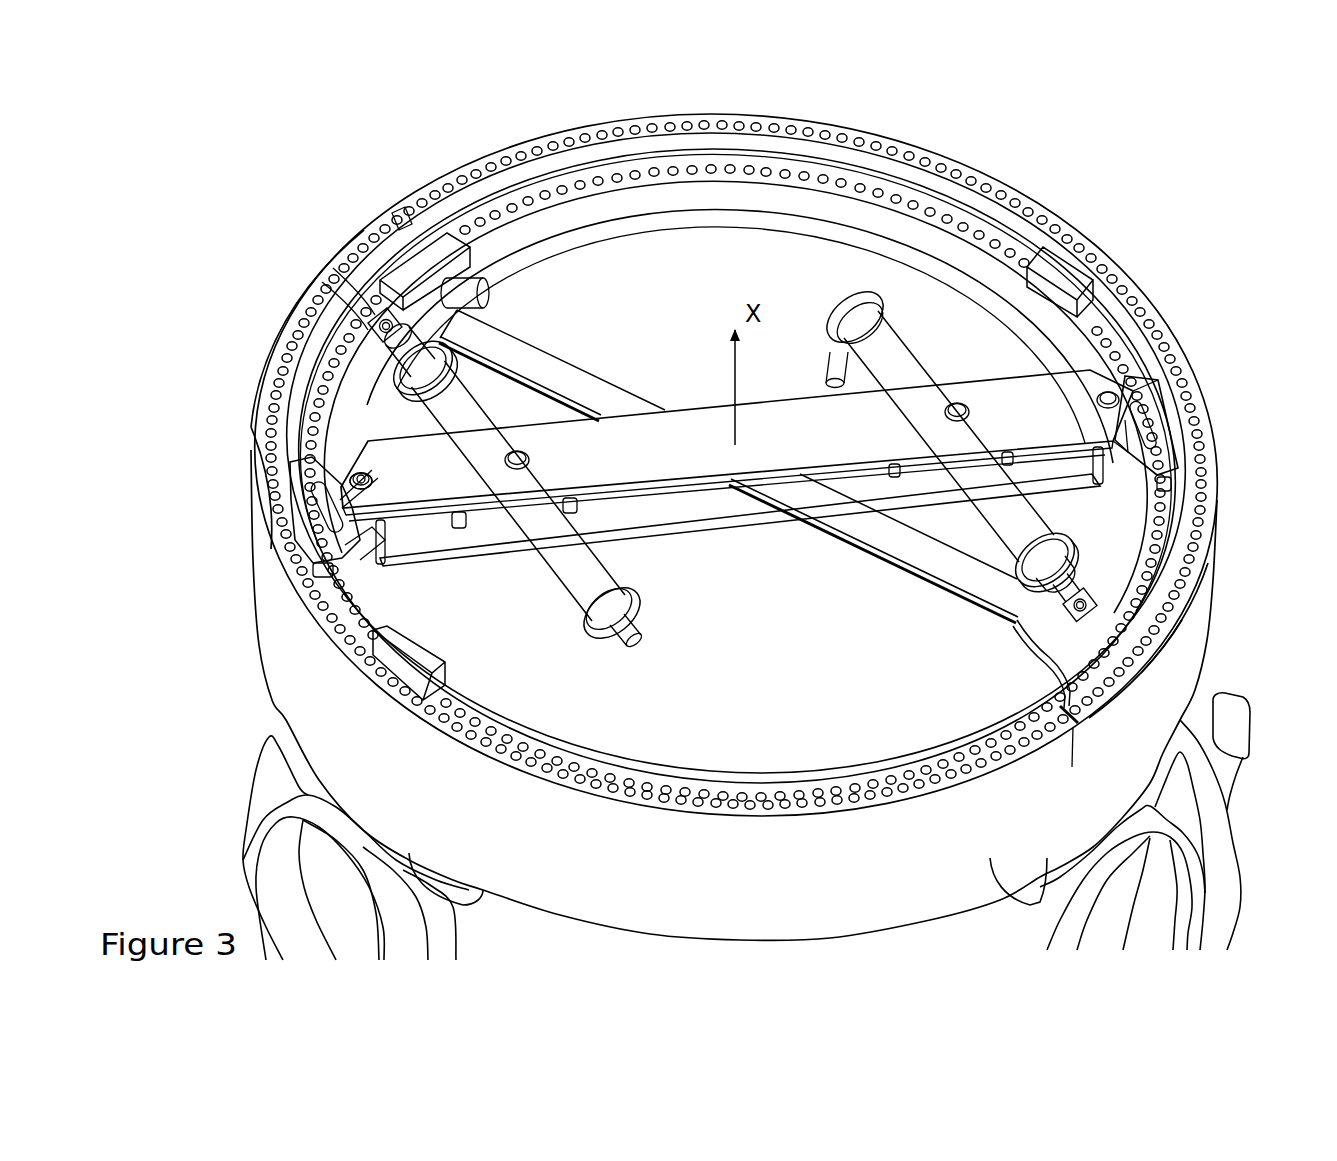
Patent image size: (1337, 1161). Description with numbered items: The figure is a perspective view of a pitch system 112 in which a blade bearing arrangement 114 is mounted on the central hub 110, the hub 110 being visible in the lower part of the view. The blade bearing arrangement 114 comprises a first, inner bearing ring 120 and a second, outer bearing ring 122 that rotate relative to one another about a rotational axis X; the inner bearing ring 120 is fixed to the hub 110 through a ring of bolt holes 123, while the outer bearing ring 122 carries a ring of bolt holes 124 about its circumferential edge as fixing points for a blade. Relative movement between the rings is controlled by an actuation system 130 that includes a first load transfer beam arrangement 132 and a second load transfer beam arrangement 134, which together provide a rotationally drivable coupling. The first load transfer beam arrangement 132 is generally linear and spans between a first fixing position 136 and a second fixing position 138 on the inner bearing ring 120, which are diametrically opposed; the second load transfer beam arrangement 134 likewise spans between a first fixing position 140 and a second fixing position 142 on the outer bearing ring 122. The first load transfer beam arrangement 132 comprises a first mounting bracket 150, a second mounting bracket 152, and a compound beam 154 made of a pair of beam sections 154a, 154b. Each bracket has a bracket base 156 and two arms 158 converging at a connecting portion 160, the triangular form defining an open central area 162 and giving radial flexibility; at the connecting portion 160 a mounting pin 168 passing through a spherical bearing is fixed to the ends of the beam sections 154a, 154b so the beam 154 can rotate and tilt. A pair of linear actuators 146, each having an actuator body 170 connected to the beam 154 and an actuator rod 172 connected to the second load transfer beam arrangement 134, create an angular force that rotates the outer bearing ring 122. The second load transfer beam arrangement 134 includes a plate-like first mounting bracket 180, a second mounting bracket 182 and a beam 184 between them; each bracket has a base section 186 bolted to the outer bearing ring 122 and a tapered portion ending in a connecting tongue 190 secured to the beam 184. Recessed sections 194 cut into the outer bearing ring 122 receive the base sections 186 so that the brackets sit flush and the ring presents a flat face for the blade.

The central hub 110 is at (1217, 840).
The pitch system 112 is at (754, 516).
The blade bearing arrangement 114 is at (754, 452).
The first bearing ring 120 is at (957, 218).
The second bearing ring 122 is at (940, 150).
The ring of bolt holes 123 is at (613, 177).
The ring of bolt holes 124 is at (670, 118).
The actuation system 130 is at (903, 740).
The first load transfer beam arrangement 132 is at (1052, 386).
The second load transfer beam arrangement 134 is at (754, 493).
The first fixing position 136 is at (375, 479).
The second fixing position 138 is at (1220, 406).
The first fixing position 140 is at (288, 348).
The second fixing position 142 is at (1193, 592).
The linear actuators 146 is at (662, 498).
The first mounting bracket 150 is at (326, 555).
The second mounting bracket 152 is at (1168, 440).
The beam 154 is at (737, 508).
The beam section 154a is at (780, 420).
The beam section 154b is at (758, 512).
The bracket base 156 is at (312, 548).
The arms 158 is at (323, 540).
The connecting portion 160 is at (373, 527).
The open central area 162 is at (345, 503).
The mounting pin 168 is at (364, 470).
The actuator body 170 is at (627, 614).
The actuator rod 172 is at (378, 314).
The first mounting bracket 180 is at (357, 228).
The second mounting bracket 182 is at (1168, 650).
The beam 184 is at (600, 405).
The base section 186 is at (338, 267).
The connecting tongue 190 is at (430, 313).
The recessed sections 194 is at (405, 205).